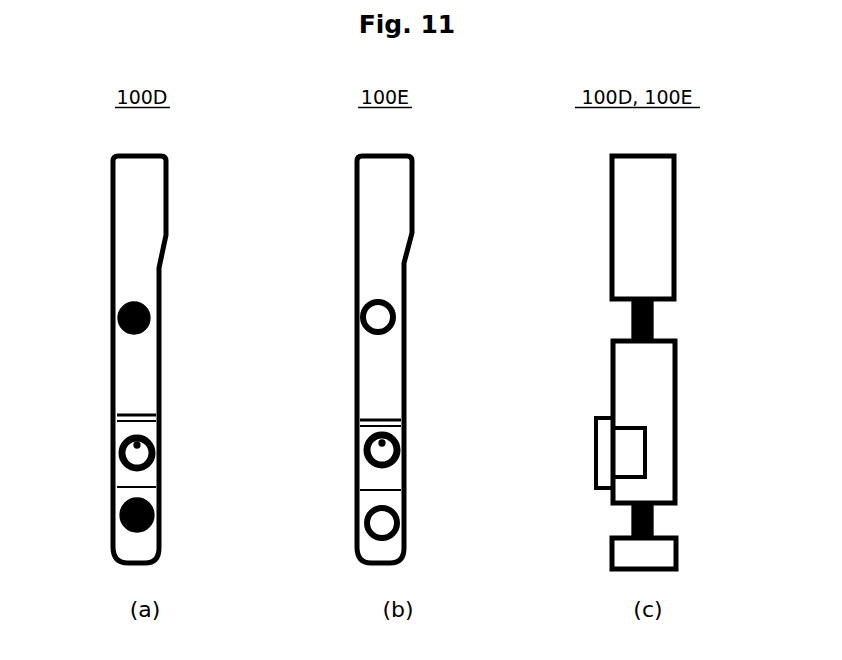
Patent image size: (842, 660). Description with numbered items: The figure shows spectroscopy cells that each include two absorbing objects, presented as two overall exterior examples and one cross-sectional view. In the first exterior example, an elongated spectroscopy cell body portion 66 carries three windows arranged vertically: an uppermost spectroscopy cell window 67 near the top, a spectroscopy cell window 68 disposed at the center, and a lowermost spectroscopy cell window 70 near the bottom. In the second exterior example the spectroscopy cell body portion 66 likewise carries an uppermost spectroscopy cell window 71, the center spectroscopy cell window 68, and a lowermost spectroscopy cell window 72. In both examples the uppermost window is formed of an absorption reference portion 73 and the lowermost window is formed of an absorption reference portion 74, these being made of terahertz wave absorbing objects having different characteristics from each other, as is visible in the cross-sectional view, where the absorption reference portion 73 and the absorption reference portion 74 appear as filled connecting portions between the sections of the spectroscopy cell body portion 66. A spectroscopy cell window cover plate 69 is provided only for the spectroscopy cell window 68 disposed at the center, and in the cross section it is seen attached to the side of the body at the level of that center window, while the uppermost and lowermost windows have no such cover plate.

The spectroscopy cell body portion 66 is at (141, 229).
The uppermost spectroscopy cell window 67 is at (166, 309).
The spectroscopy cell window 68 is at (119, 453).
The spectroscopy cell window cover plate 69 is at (167, 404).
The lowermost spectroscopy cell window 70 is at (163, 502).
The uppermost spectroscopy cell window 71 is at (407, 305).
The lowermost spectroscopy cell window 72 is at (410, 512).
The absorption reference portion 73 is at (627, 323).
The absorption reference portion 74 is at (629, 523).